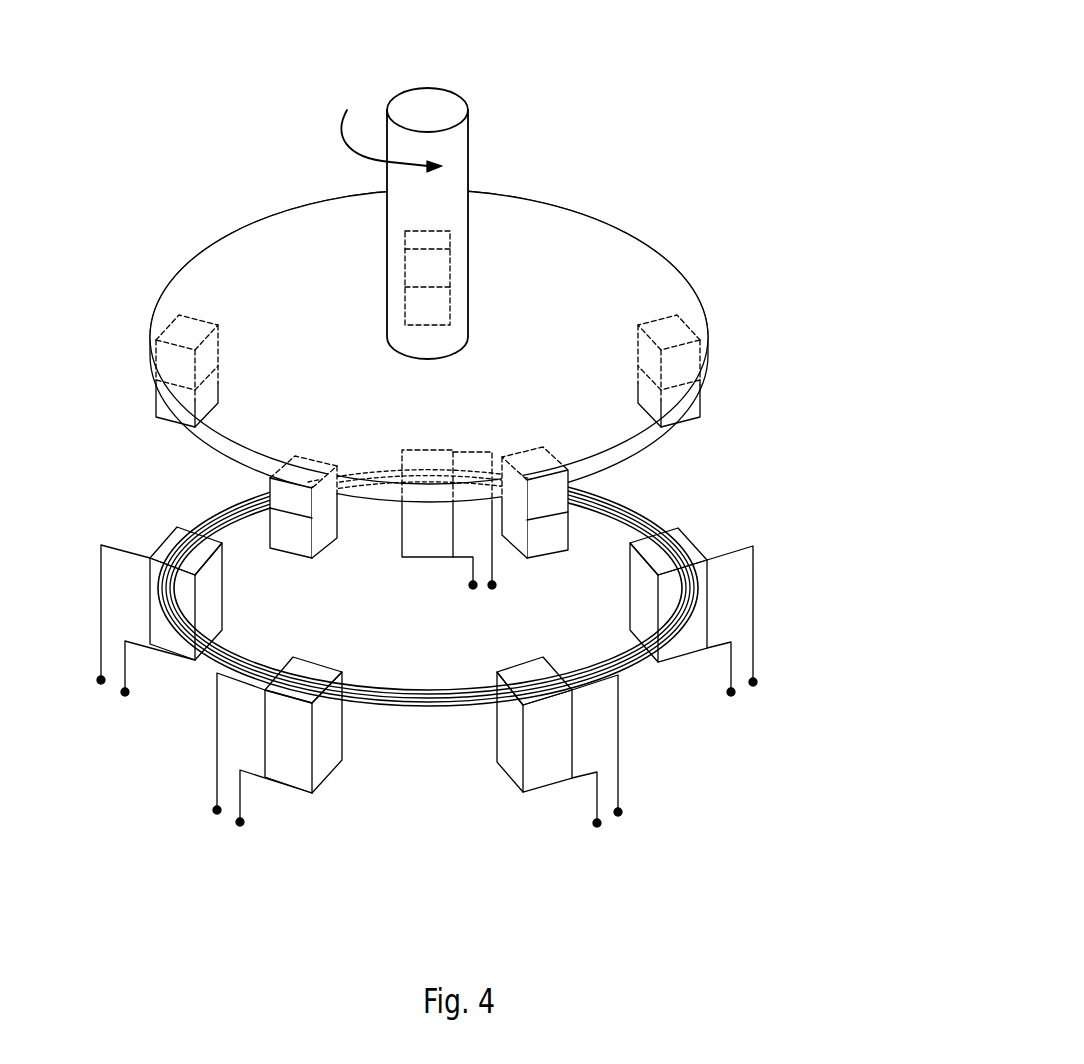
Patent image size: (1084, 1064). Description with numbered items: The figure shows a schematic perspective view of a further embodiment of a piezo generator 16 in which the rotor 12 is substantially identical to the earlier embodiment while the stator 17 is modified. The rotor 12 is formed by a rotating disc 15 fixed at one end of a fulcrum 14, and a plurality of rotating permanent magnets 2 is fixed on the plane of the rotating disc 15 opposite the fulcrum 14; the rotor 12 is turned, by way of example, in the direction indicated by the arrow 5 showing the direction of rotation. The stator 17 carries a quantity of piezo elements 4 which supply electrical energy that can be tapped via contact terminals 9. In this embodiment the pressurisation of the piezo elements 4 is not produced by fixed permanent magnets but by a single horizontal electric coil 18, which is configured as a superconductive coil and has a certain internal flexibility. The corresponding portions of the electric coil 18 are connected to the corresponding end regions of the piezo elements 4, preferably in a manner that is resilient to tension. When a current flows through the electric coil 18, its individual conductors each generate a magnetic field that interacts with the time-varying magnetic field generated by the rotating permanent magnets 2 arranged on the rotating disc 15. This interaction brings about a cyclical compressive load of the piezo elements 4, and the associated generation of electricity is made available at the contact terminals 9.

The rotating permanent magnet 2 is at (558, 547).
The piezo element 4 is at (508, 738).
The arrow showing the direction of rotation 5 is at (370, 158).
The contact terminal 9 is at (618, 812).
The rotor 12 is at (515, 319).
The fulcrum 14 is at (428, 108).
The rotating disc 15 is at (607, 257).
The piezo generator 16 is at (501, 453).
The stator 17 is at (501, 453).
The electric coil 18 is at (655, 515).